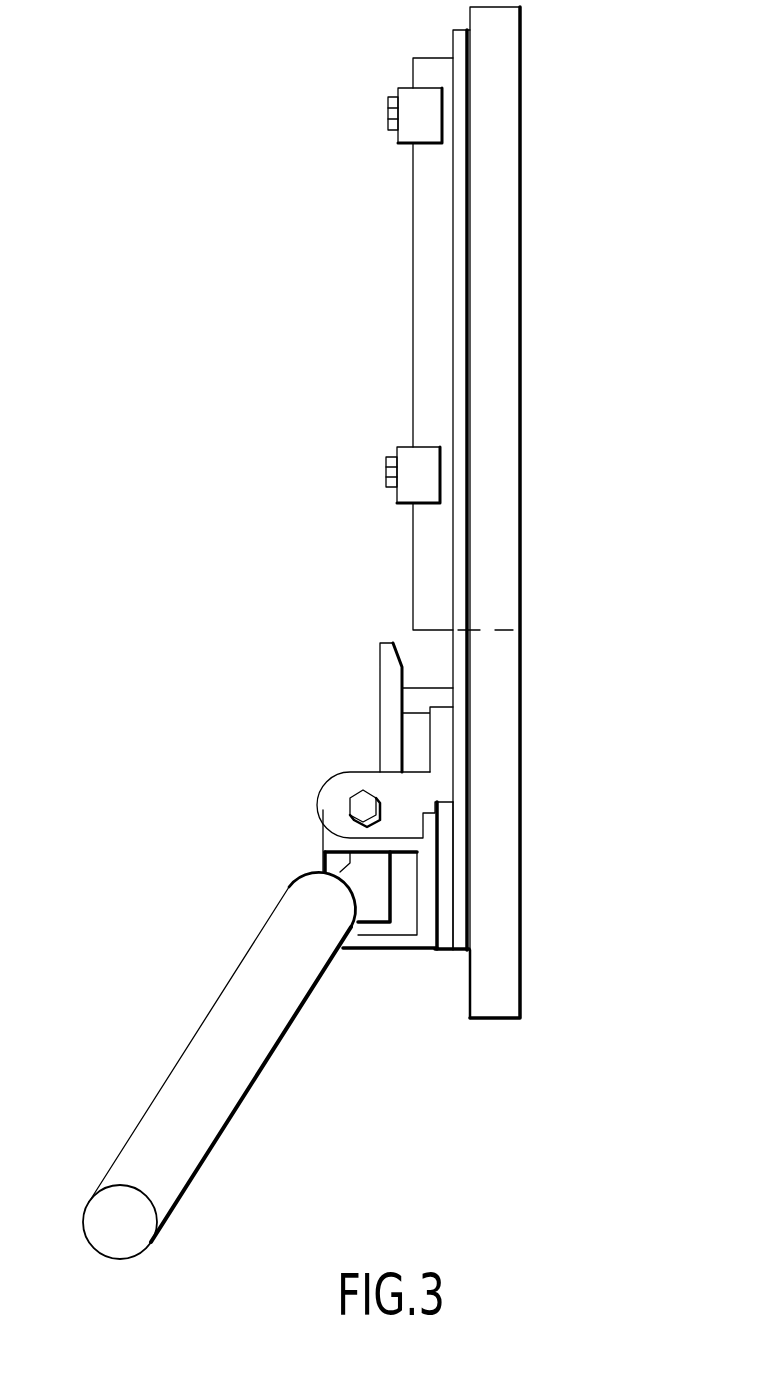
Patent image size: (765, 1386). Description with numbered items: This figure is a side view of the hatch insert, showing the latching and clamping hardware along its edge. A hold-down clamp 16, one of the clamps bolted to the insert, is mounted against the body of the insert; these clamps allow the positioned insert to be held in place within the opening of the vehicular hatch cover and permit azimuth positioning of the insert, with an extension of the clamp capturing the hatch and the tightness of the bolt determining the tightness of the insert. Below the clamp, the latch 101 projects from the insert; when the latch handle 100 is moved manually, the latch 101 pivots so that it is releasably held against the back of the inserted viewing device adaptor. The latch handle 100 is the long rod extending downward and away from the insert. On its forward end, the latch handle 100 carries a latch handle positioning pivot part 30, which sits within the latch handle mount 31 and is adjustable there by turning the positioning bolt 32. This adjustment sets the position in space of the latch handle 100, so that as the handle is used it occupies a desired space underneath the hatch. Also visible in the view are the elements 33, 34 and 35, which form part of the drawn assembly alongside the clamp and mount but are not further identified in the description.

The hold-down clamp 16 is at (418, 103).
The latch handle positioning pivot part 30 is at (373, 908).
The latch handle mount 31 is at (345, 785).
The positioning bolt 32 is at (365, 803).
The panel 33 is at (498, 337).
The mounting plate 34 is at (467, 335).
The wire 35 is at (432, 227).
The latch handle 100 is at (223, 1090).
The latch 101 is at (388, 670).